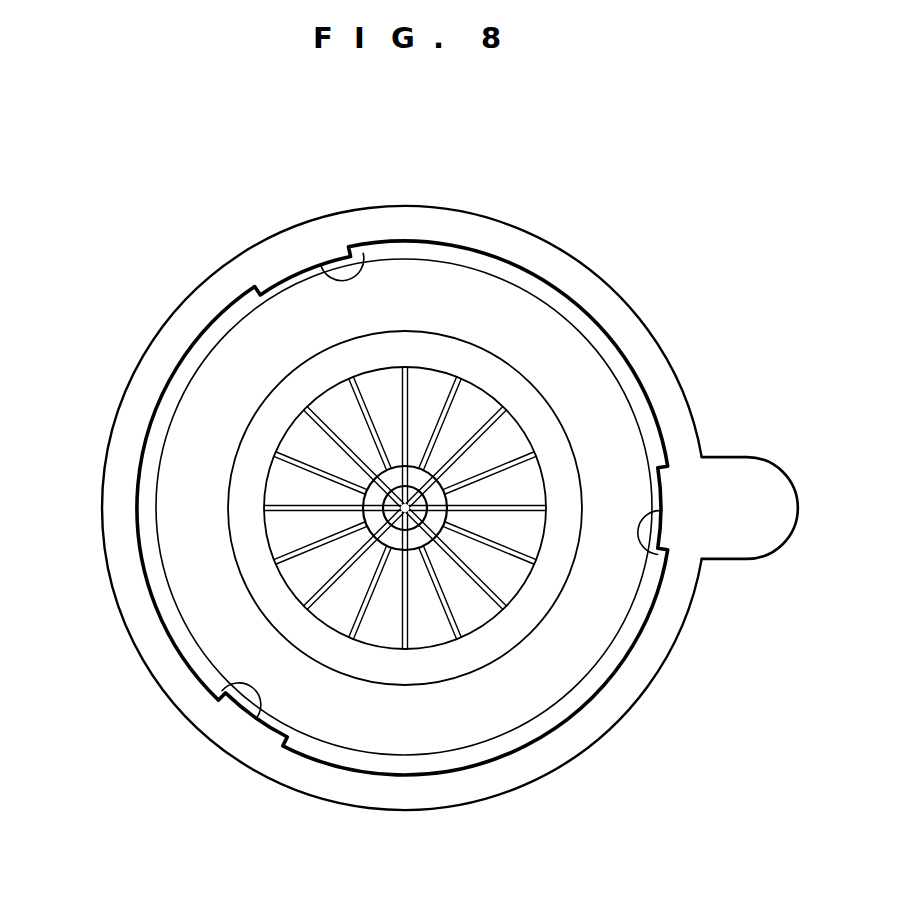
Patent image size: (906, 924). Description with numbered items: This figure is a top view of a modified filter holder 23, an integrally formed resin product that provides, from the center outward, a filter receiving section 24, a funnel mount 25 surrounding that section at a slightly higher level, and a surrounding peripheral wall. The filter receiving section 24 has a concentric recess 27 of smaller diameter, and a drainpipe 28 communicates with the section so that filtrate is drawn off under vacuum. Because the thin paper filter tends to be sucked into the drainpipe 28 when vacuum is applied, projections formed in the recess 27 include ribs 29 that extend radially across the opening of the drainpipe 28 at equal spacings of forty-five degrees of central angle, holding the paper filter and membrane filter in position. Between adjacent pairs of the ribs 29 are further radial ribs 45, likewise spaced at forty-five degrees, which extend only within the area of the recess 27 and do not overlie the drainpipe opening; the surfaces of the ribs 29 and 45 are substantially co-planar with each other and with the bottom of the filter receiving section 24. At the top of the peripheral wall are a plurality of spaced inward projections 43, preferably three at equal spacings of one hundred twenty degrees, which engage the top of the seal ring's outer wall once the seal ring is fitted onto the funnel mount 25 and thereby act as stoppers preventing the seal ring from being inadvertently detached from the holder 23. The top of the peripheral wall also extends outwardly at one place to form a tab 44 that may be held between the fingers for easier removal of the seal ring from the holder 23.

The filter holder 23 is at (572, 207).
The filter receiving section 24 is at (516, 639).
The funnel mount 25 is at (604, 394).
The concentric recess 27 is at (273, 494).
The drainpipe 28 is at (288, 445).
The ribs 29 is at (485, 425).
The inward projections 43 is at (363, 262).
The tab 44 is at (758, 523).
The radial ribs 45 is at (443, 603).